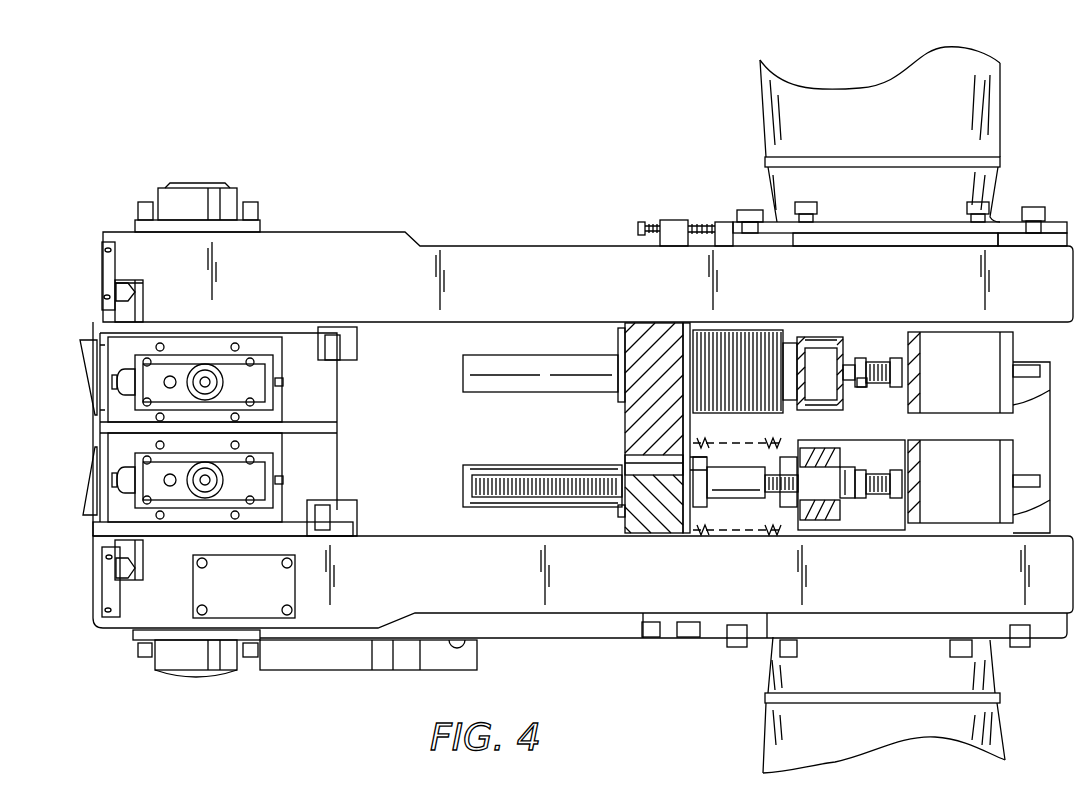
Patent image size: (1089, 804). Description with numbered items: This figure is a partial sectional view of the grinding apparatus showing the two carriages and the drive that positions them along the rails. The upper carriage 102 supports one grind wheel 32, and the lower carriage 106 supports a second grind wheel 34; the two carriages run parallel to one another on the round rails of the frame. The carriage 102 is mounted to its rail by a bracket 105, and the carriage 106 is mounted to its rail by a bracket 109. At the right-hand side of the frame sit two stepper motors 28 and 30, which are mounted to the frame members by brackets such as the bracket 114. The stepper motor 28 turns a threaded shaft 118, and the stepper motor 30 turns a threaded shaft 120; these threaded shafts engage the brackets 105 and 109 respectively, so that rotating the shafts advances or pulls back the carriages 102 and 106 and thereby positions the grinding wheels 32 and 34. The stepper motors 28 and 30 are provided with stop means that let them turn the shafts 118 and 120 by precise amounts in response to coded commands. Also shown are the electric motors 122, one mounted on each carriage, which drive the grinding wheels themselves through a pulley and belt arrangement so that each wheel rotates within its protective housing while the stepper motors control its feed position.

The carriage 102 is at (560, 246).
The carriage 106 is at (600, 613).
The electric motor 122 is at (760, 118).
The bracket 105 is at (626, 345).
The bracket 109 is at (626, 447).
The threaded shaft 120 is at (490, 474).
The bracket 114 is at (908, 348).
The threaded shaft 118 is at (858, 387).
The stepper motor 28 is at (1012, 406).
The stepper motor 30 is at (1012, 516).
The grind wheel 32 is at (92, 381).
The grind wheel 34 is at (90, 486).